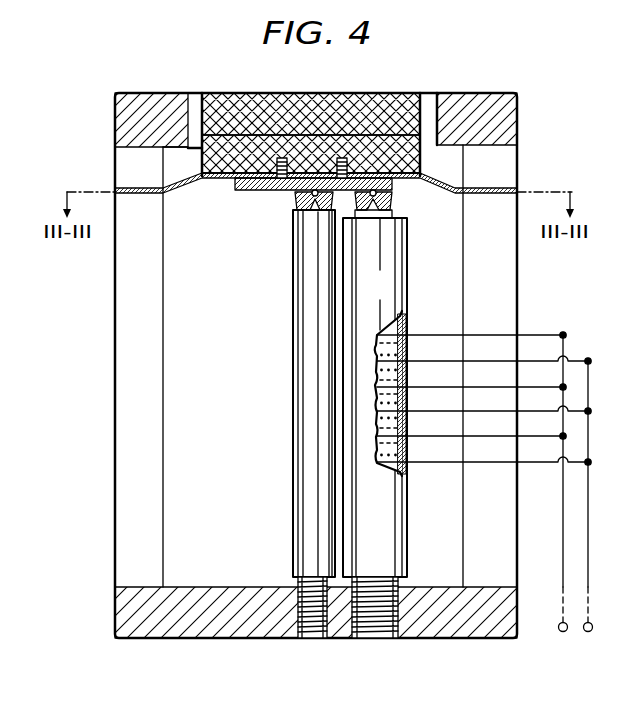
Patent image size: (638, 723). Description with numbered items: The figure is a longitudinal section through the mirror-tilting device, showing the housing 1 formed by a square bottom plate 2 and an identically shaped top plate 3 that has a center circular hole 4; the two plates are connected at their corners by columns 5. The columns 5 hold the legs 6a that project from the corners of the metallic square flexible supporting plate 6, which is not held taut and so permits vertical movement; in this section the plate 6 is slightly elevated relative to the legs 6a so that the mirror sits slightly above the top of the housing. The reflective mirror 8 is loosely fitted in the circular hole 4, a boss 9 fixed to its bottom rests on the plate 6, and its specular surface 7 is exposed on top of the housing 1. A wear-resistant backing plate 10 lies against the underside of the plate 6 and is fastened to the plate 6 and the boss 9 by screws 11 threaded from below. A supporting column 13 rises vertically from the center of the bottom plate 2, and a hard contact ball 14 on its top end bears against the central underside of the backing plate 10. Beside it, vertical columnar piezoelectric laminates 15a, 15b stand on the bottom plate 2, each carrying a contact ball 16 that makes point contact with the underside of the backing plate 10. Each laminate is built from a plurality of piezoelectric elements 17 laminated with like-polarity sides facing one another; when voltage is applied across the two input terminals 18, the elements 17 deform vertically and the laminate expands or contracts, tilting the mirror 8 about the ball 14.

The housing 1 is at (529, 165).
The bottom plate 2 is at (118, 612).
The top plate 3 is at (118, 113).
The circular hole 4 is at (434, 108).
The columns 5 is at (119, 338).
The flexible supporting plate 6 is at (322, 172).
The legs 6a is at (193, 191).
The specular surface 7 is at (230, 89).
The reflective mirror 8 is at (402, 112).
The boss 9 is at (203, 160).
The backing plate 10 is at (244, 191).
The screws 11 is at (347, 163).
The supporting column 13 is at (293, 372).
The contact ball 14 is at (316, 203).
The piezoelectric laminate 15a is at (405, 548).
The piezoelectric laminate 15b is at (312, 607).
The contact ball 16 is at (394, 200).
The piezoelectric elements 17 is at (403, 425).
The input terminals 18 is at (563, 632).